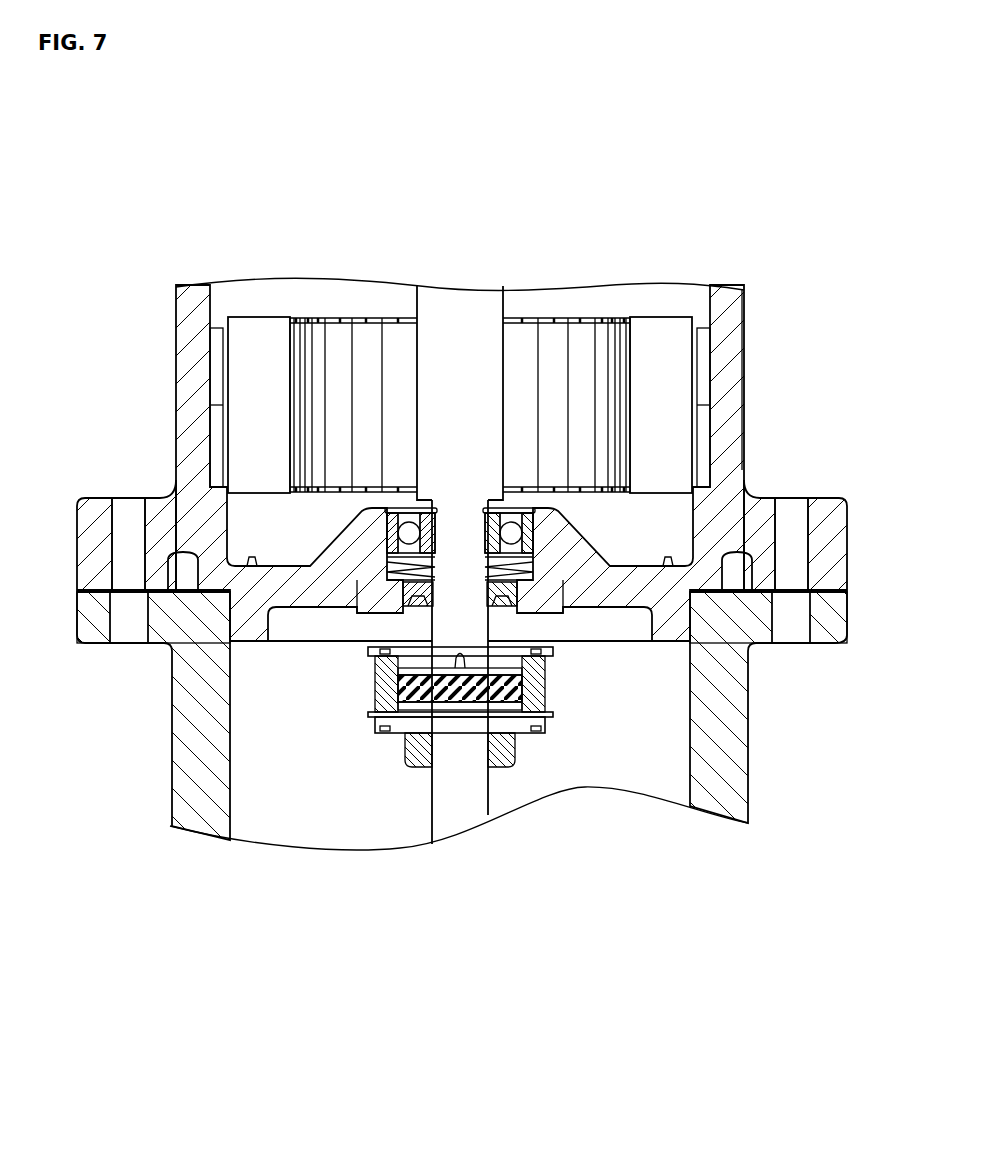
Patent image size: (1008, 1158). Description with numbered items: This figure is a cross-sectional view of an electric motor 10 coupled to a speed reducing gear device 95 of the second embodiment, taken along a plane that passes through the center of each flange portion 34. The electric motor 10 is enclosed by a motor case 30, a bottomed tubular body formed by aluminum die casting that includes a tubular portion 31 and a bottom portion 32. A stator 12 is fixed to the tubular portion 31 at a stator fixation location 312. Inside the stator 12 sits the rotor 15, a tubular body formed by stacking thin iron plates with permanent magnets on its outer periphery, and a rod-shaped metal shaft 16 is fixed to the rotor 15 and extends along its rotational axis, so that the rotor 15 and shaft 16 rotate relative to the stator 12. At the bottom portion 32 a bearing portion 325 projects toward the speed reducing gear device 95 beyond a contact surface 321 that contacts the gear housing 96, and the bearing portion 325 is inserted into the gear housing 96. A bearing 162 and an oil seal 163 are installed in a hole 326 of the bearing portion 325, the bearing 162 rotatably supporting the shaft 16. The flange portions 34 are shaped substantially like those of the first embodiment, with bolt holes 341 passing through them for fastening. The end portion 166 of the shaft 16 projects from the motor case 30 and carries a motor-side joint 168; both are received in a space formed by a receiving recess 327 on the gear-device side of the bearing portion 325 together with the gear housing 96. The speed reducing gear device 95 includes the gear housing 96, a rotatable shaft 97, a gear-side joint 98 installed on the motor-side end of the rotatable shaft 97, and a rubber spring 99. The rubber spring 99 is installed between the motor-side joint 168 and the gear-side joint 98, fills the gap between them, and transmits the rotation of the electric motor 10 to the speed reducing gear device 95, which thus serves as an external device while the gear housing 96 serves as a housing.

The electric motor 10 is at (857, 473).
The motor case 30 is at (760, 319).
The tubular portion 31 is at (747, 378).
The stator fixation location 312 is at (747, 346).
The flange portion 34 is at (77, 572).
The bolt hole 341 is at (122, 515).
The stator 12 is at (218, 338).
The rotor 15 is at (333, 367).
The shaft 16 is at (437, 418).
The bearing 162 is at (535, 523).
The oil seal 163 is at (540, 592).
The hole 326 is at (387, 528).
The bottom portion 32 is at (300, 583).
The contact surface 321 is at (93, 593).
The bearing portion 325 is at (335, 575).
The receiving recess 327 is at (270, 620).
The speed reducing gear device 95 is at (155, 806).
The gear housing 96 is at (733, 803).
The rotatable shaft 97 is at (442, 827).
The gear-side joint 98 is at (522, 732).
The rubber spring 99 is at (515, 690).
The end portion 166 is at (467, 668).
The motor-side joint 168 is at (538, 680).